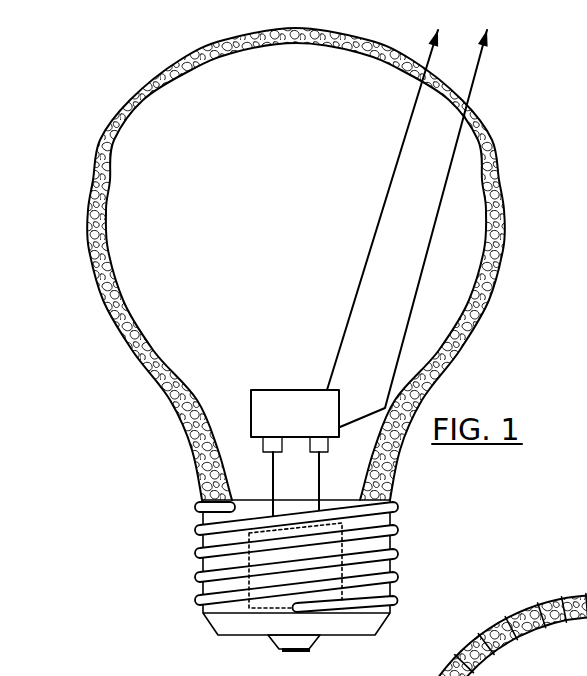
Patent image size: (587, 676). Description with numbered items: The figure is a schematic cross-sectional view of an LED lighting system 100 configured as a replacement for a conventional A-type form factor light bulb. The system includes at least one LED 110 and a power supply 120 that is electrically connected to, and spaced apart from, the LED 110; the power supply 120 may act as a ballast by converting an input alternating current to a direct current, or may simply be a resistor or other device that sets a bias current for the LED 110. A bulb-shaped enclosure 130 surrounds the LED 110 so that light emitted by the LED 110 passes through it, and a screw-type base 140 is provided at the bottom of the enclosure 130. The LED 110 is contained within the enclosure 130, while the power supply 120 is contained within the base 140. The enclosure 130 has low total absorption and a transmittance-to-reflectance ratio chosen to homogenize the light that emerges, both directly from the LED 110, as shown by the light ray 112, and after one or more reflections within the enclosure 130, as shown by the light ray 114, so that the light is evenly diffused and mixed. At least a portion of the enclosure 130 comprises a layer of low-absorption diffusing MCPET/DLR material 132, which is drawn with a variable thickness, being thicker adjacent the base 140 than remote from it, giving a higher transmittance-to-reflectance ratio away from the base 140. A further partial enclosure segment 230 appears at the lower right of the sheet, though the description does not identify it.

The LED lighting system 100 is at (495, 111).
The LED 110 is at (285, 390).
The light ray 112 is at (370, 250).
The light ray 114 is at (430, 240).
The power supply 120 is at (244, 549).
The enclosure 130 is at (198, 57).
The layer of MCPET/DLR material 132 is at (94, 270).
The screw-type base 140 is at (394, 568).
The envelope of alternative lamp 230 is at (483, 632).